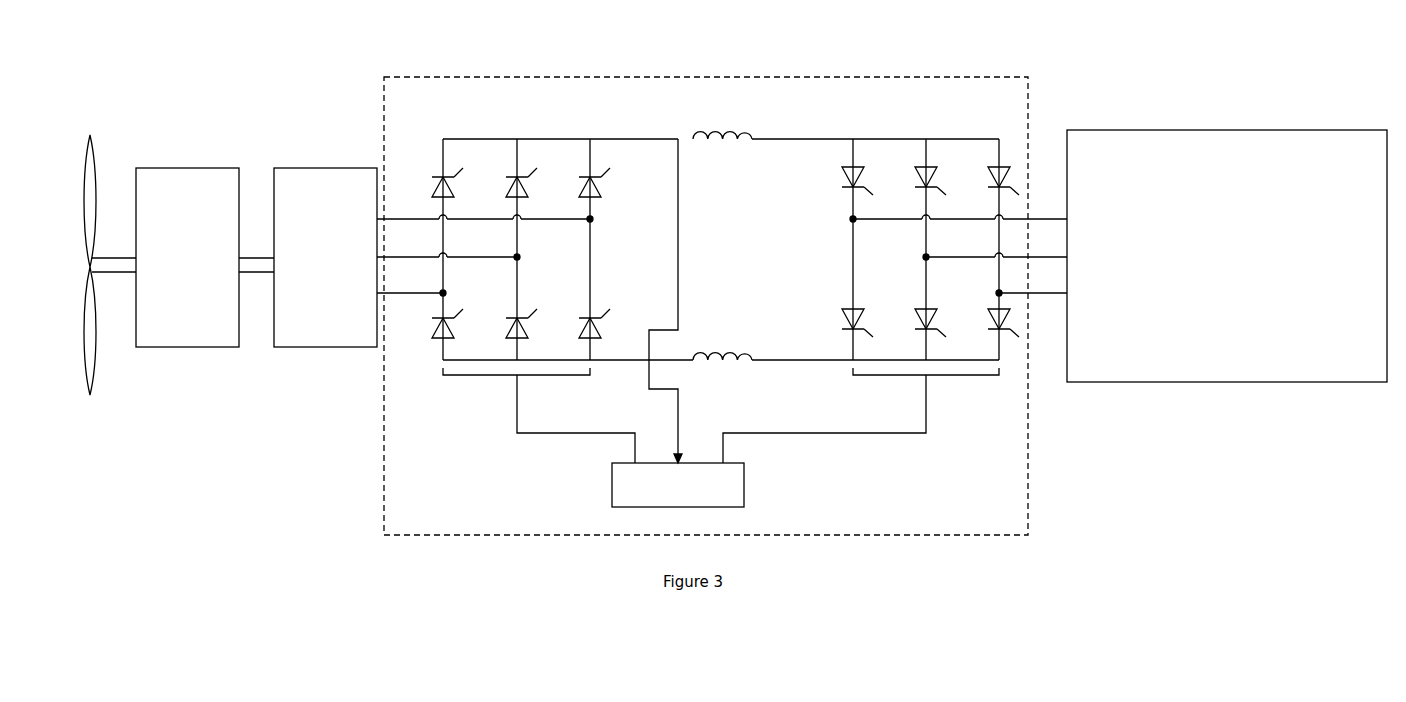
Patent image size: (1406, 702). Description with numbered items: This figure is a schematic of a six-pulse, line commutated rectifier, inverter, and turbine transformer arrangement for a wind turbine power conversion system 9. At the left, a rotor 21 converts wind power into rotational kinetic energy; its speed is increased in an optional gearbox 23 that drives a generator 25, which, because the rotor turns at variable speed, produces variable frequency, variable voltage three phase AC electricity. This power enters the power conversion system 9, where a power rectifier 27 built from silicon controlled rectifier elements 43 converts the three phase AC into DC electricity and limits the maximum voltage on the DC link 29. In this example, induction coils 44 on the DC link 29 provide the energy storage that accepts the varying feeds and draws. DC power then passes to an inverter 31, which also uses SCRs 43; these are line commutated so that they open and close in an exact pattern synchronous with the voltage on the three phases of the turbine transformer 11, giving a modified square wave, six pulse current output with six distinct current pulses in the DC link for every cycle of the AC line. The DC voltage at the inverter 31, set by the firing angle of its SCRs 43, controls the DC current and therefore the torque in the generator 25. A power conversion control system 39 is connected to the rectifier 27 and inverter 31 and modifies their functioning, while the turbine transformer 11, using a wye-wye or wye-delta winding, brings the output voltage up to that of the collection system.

The power conversion system 9 is at (1029, 74).
The turbine transformer 11 is at (1208, 129).
The rotor 21 is at (89, 268).
The gear box 23 is at (205, 257).
The generator 25 is at (325, 257).
The rectifier 27 is at (590, 138).
The DC link 29 is at (723, 147).
The inverter 31 is at (877, 138).
The power conversion control system 39 is at (678, 485).
The silicon controlled rectifier elements 43 is at (711, 252).
The induction coils 44 is at (723, 123).